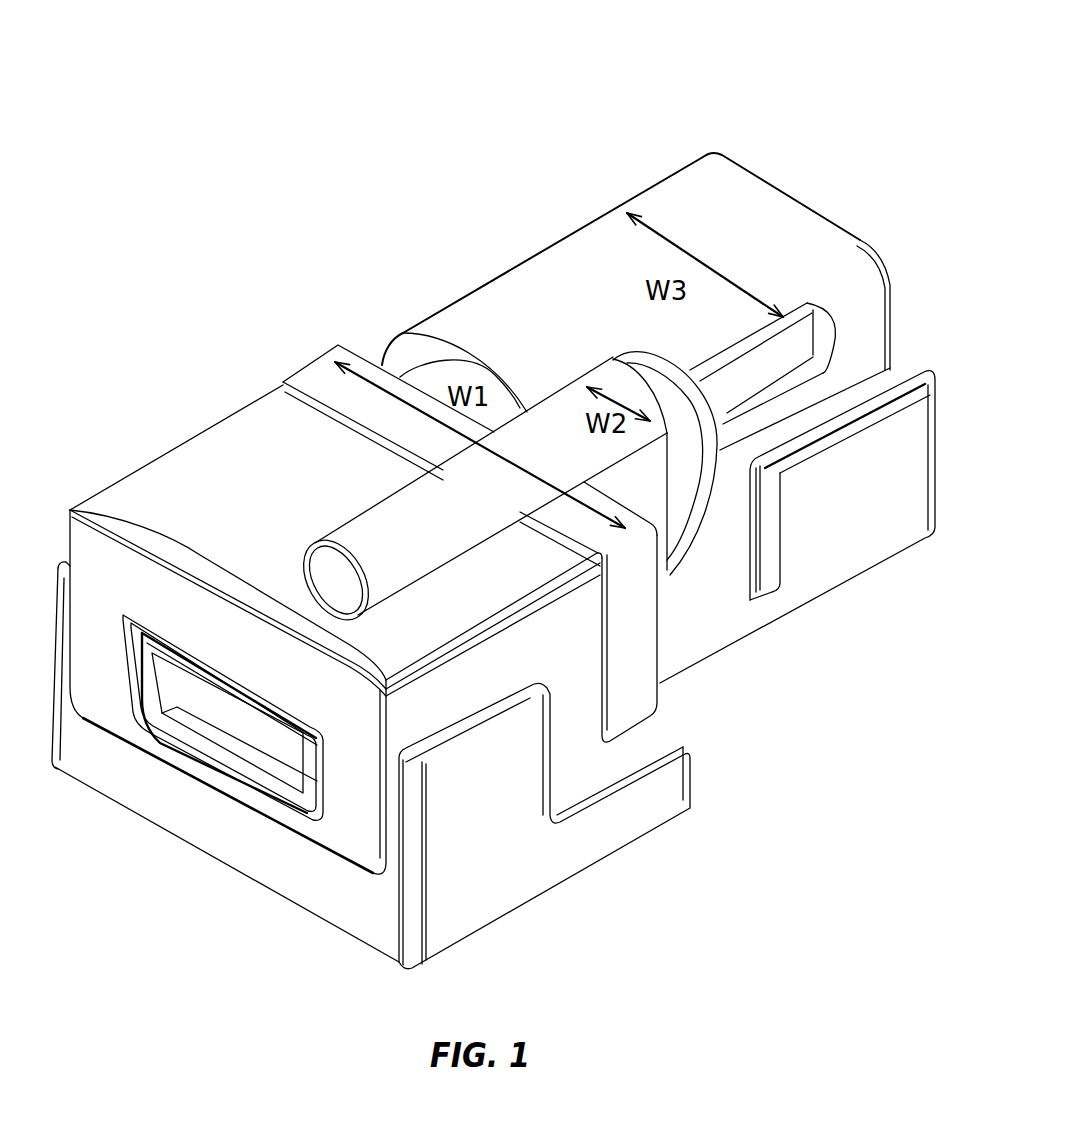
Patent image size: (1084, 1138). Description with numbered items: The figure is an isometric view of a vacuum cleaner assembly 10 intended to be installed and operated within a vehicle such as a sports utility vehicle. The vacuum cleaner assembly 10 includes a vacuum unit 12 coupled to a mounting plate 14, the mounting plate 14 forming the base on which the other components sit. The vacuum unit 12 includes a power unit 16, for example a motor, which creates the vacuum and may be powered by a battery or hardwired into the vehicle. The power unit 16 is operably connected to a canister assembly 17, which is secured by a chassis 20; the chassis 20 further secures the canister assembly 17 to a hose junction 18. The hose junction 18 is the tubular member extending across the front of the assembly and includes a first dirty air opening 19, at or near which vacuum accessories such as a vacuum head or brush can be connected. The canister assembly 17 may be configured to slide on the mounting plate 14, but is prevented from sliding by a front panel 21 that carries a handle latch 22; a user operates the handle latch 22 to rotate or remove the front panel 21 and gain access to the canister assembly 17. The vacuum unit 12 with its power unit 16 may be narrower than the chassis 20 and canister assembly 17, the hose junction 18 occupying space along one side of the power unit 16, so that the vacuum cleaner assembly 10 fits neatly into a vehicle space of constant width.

The vacuum cleaner assembly 10 is at (225, 292).
The vacuum unit 12 is at (607, 250).
The mounting plate 14 is at (537, 872).
The power unit 16 is at (747, 277).
The canister assembly 17 is at (250, 503).
The hose junction 18 is at (493, 493).
The first dirty air opening 19 is at (345, 590).
The chassis 20 is at (636, 670).
The front panel 21 is at (352, 780).
The handle latch 22 is at (267, 762).